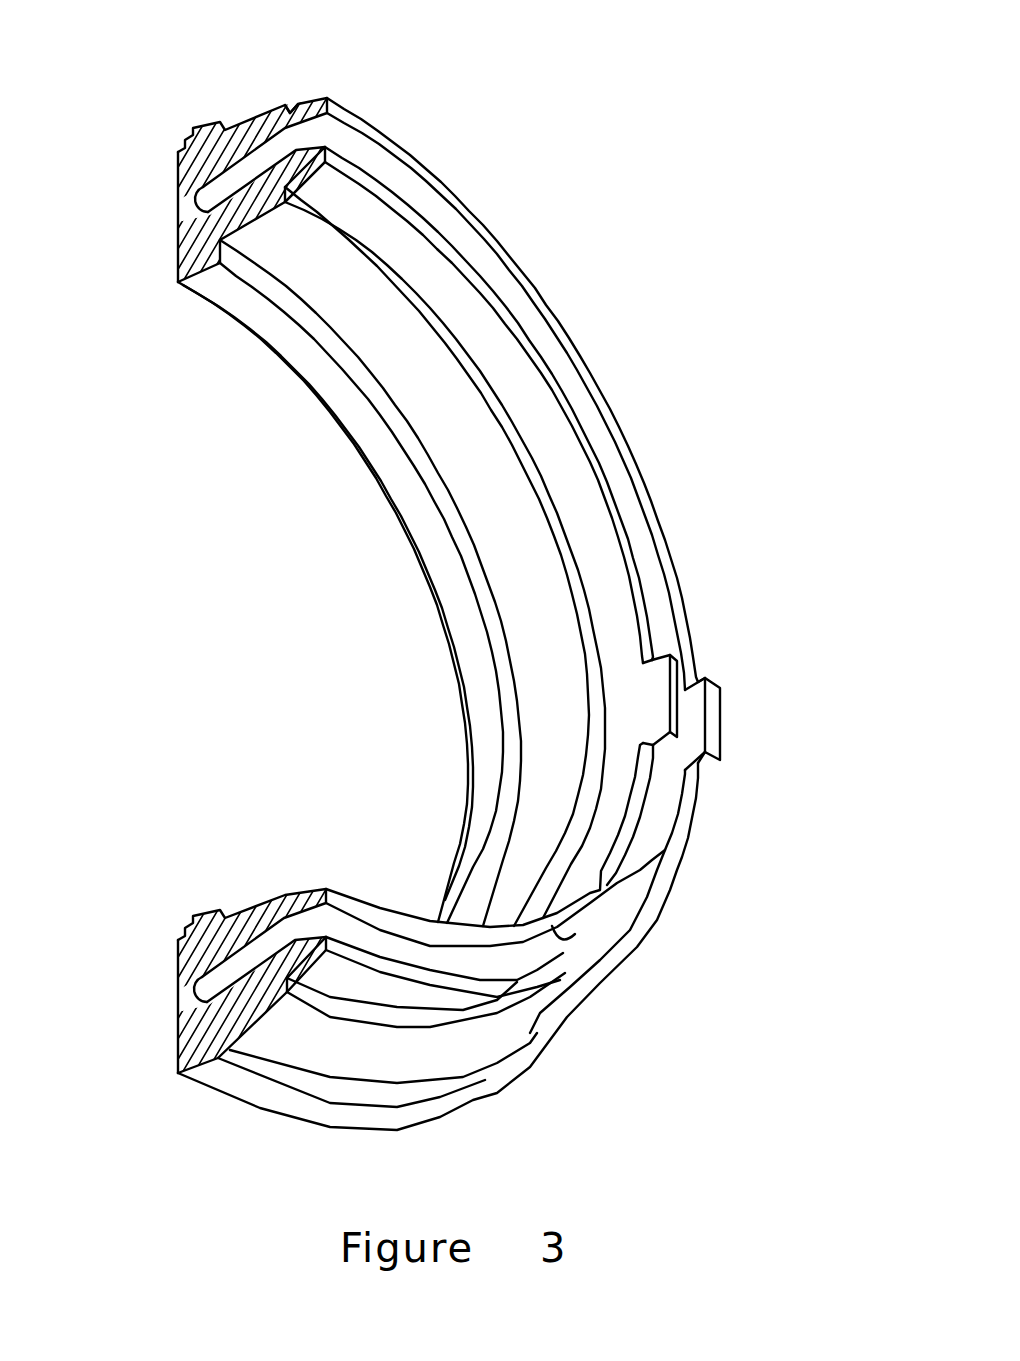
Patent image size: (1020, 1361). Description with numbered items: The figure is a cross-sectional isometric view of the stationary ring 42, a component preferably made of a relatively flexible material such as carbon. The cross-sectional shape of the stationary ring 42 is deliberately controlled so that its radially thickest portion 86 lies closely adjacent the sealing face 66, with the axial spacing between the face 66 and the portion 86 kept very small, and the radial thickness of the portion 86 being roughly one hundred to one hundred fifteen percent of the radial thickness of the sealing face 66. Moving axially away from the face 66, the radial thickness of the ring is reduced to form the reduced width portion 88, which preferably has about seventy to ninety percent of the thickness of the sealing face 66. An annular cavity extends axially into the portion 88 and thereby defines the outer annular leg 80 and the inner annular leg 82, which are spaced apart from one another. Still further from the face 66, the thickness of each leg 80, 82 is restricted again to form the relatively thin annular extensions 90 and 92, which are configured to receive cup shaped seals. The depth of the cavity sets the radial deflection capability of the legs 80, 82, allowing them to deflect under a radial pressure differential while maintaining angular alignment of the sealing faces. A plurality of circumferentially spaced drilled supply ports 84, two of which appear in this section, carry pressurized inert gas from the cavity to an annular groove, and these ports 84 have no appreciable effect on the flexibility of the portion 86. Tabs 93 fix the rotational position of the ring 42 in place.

The stationary ring 42 is at (505, 112).
The sealing face 66 is at (181, 160).
The outer annular leg 80 is at (288, 105).
The inner annular leg 82 is at (262, 205).
The drilled supply ports 84 is at (240, 180).
The radially thickest portion 86 is at (480, 712).
The reduced width portion 88 is at (462, 415).
The annular extension 90 is at (443, 196).
The annular extension 92 is at (489, 340).
The tabs 93 is at (712, 722).